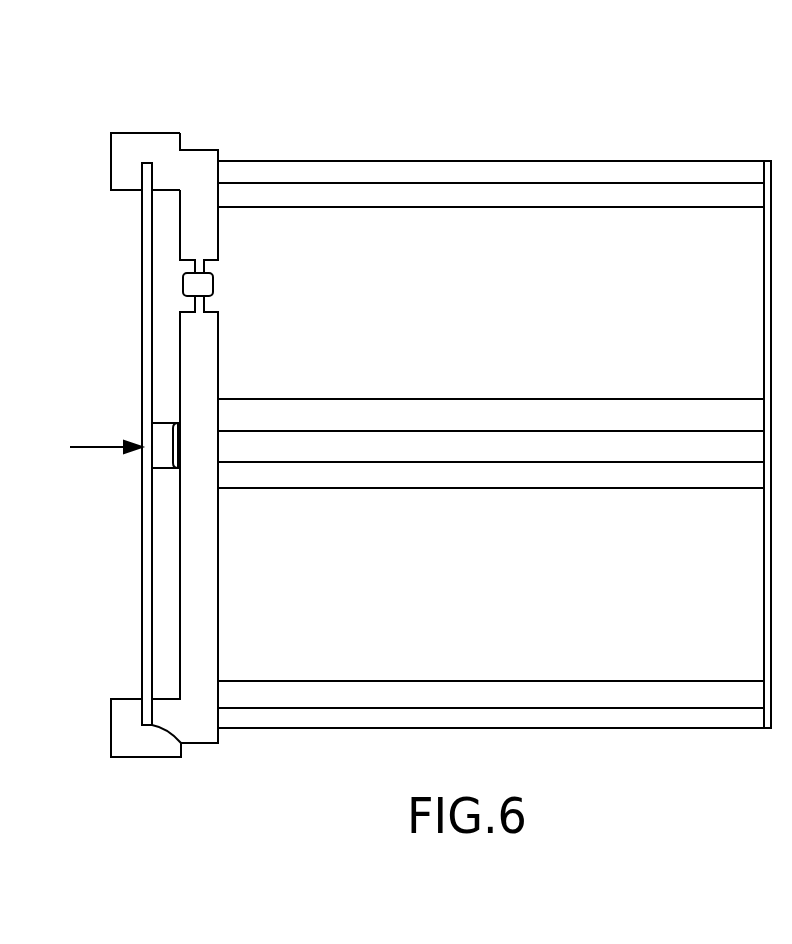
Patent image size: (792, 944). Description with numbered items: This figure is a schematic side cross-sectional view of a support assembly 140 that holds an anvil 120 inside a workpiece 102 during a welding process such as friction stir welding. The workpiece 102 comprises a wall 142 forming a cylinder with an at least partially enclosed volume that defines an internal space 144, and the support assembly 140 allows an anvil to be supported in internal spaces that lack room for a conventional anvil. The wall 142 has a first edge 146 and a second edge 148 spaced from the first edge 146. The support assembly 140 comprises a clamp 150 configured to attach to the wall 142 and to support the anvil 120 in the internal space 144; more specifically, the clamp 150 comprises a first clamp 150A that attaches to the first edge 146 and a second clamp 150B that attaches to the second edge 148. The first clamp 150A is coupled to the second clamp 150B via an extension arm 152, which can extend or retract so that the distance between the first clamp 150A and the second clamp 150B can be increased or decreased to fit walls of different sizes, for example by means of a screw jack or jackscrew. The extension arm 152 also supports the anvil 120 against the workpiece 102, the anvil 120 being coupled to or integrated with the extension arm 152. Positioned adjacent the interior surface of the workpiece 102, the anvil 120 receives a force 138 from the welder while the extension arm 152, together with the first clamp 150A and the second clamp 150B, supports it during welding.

The workpiece 102 is at (497, 160).
The anvil 120 is at (152, 468).
The force 138 is at (100, 446).
The support assembly 140 is at (237, 155).
The wall 142 is at (147, 530).
The internal space 144 is at (628, 228).
The first edge 146 is at (152, 163).
The second edge 148 is at (183, 748).
The clamp 150 is at (140, 118).
The first clamp 150A is at (111, 133).
The second clamp 150B is at (142, 757).
The extension arm 152 is at (173, 283).